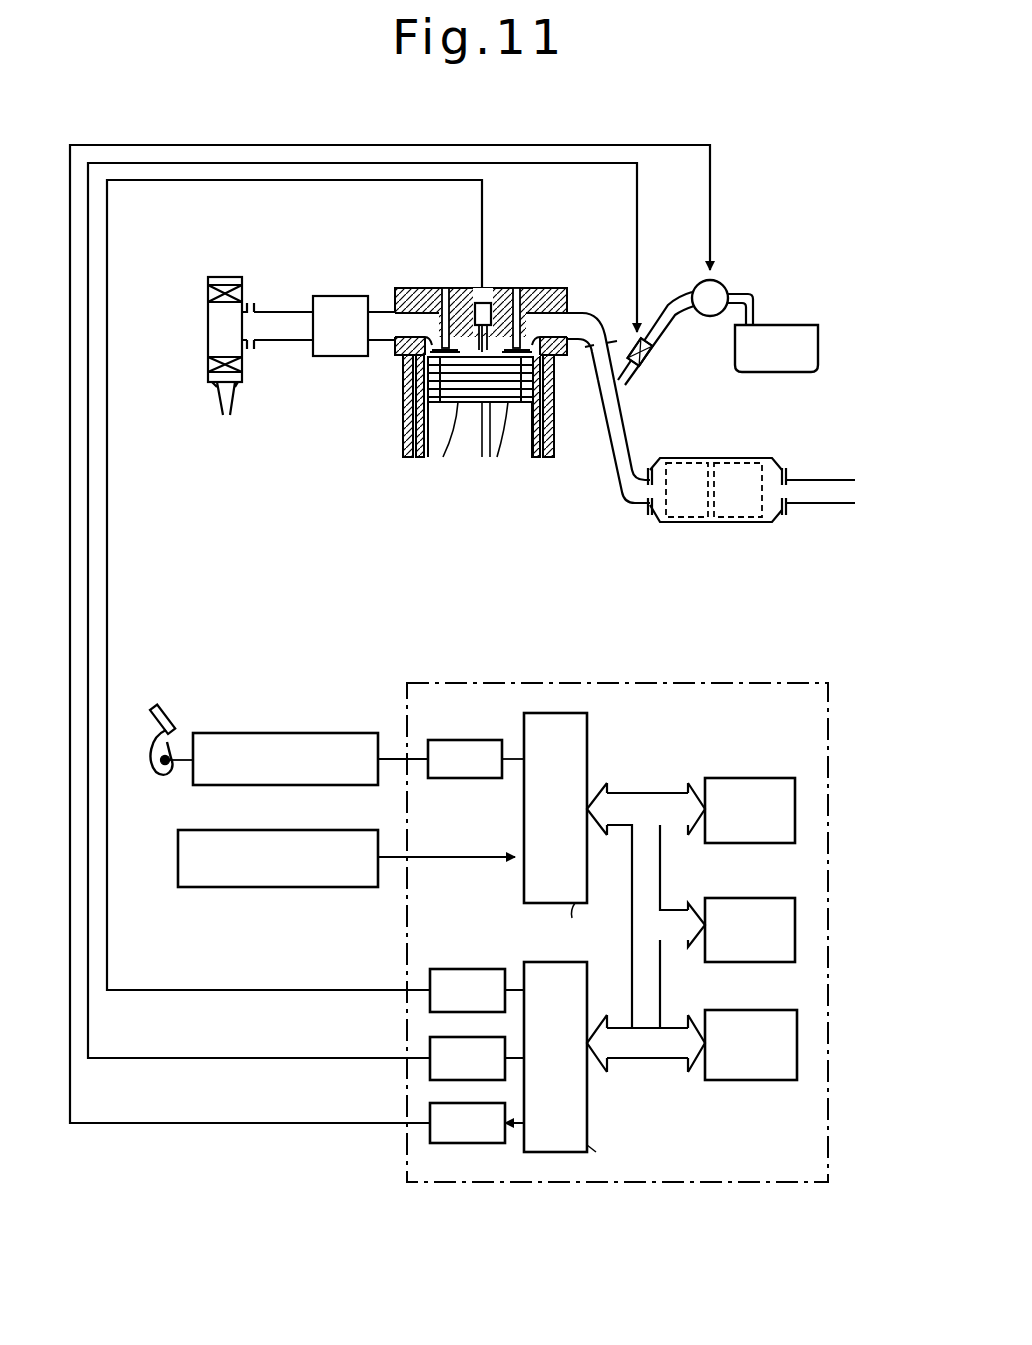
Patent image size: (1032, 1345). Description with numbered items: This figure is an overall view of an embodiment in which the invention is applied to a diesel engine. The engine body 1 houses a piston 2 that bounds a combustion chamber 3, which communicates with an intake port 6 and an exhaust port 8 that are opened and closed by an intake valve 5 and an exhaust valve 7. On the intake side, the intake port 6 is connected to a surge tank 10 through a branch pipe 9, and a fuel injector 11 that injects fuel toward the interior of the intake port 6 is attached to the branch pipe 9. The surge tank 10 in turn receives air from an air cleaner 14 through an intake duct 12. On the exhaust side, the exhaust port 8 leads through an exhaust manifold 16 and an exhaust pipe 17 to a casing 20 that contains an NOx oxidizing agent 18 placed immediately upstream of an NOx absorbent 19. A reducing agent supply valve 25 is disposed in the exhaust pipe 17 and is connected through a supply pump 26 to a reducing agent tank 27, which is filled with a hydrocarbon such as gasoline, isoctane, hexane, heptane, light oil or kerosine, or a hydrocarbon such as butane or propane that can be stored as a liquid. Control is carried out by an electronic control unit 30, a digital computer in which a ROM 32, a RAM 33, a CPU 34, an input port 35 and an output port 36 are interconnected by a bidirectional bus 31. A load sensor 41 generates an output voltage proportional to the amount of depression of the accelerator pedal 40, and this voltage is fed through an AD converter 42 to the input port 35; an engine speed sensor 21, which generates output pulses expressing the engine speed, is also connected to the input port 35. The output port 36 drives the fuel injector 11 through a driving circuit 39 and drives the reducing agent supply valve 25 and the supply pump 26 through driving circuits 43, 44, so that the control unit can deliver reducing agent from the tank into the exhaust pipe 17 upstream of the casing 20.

The engine body 1 is at (556, 446).
The piston 2 is at (500, 436).
The combustion chamber 3 is at (446, 440).
The intake valve 5 is at (435, 290).
The intake port 6 is at (405, 300).
The exhaust valve 7 is at (526, 302).
The exhaust port 8 is at (573, 313).
The branch pipe 9 is at (375, 345).
The surge tank 10 is at (322, 360).
The fuel injector 11 is at (487, 300).
The intake duct 12 is at (276, 345).
The air cleaner 14 is at (208, 350).
The exhaust manifold 16 is at (592, 325).
The exhaust pipe 17 is at (635, 430).
The NOx oxidizing agent 18 is at (690, 460).
The NOx absorbent 19 is at (748, 460).
The casing 20 is at (706, 522).
The engine speed sensor 21 is at (280, 830).
The reducing agent supply valve 25 is at (650, 366).
The supply pump 26 is at (724, 283).
The reducing agent tank 27 is at (783, 328).
The electronic control unit 30 is at (848, 694).
The bidirectional bus 31 is at (650, 800).
The ROM 32 is at (763, 778).
The RAM 33 is at (763, 898).
The CPU 34 is at (763, 1012).
The input port 35 is at (590, 730).
The output port 36 is at (590, 1125).
The driving circuit 39 is at (430, 982).
The accelerator pedal 40 is at (172, 710).
The load sensor 41 is at (280, 732).
The AD converter 42 is at (465, 740).
The driving circuit 43 is at (430, 1050).
The driving circuit 44 is at (430, 1117).